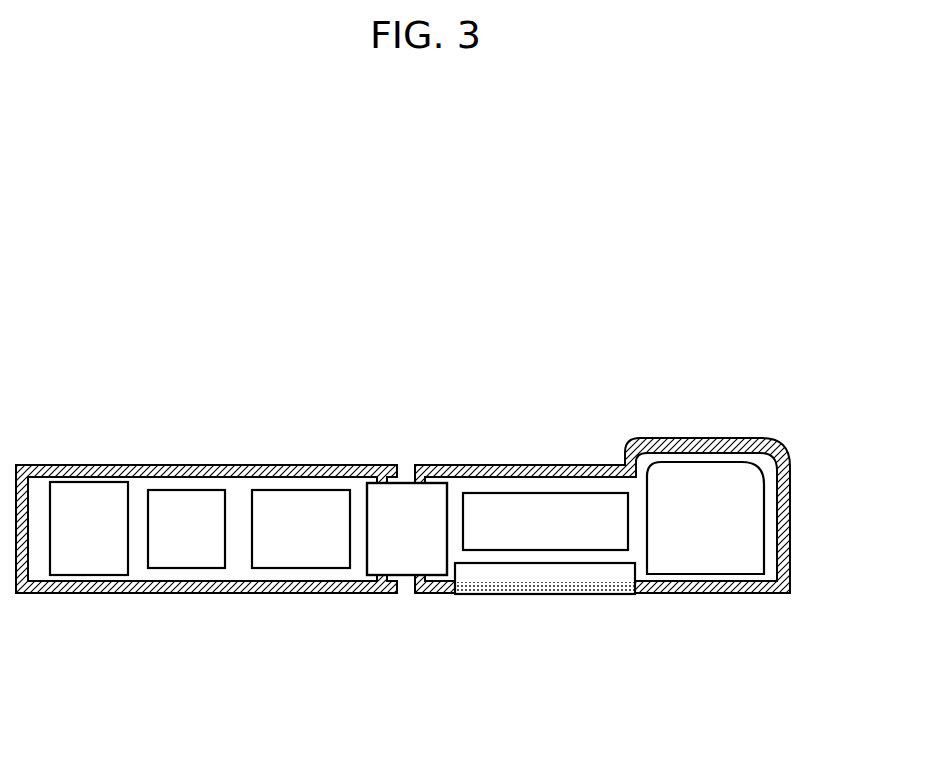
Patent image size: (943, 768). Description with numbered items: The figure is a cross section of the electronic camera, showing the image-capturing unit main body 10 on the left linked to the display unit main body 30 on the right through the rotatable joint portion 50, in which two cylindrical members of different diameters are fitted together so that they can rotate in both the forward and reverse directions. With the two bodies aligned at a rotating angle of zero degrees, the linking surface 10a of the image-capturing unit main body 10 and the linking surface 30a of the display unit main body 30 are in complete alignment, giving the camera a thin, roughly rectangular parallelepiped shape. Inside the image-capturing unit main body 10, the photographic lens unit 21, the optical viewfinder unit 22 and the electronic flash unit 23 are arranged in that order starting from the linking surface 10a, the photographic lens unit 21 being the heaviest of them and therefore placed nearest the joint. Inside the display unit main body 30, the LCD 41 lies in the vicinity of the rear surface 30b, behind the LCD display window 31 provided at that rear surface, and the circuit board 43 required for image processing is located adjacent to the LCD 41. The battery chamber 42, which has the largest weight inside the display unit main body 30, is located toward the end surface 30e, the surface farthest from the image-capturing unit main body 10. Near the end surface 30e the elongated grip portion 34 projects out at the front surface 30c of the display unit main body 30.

The image-capturing unit main body 10 is at (237, 350).
The linking surface 10a is at (400, 585).
The photographic lens unit 21 is at (305, 497).
The optical viewfinder unit 22 is at (188, 497).
The electronic flash unit 23 is at (89, 496).
The display unit main body 30 is at (641, 352).
The linking surface 30a is at (404, 466).
The rear surface 30b is at (660, 597).
The front surface 30c is at (562, 467).
The end surface 30e is at (795, 548).
The LCD display window 31 is at (513, 597).
The elongated grip portion 34 is at (698, 437).
The LCD 41 is at (568, 572).
The battery chamber 42 is at (738, 562).
The circuit board 43 is at (497, 508).
The rotatable joint portion 50 is at (380, 551).